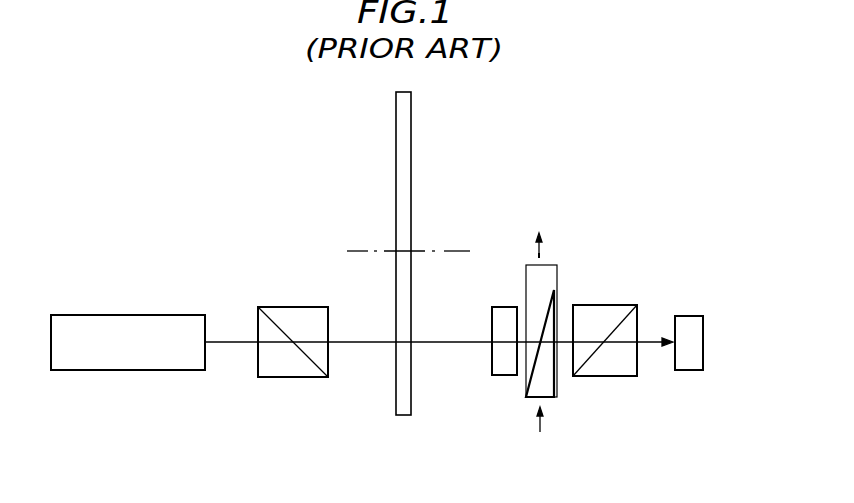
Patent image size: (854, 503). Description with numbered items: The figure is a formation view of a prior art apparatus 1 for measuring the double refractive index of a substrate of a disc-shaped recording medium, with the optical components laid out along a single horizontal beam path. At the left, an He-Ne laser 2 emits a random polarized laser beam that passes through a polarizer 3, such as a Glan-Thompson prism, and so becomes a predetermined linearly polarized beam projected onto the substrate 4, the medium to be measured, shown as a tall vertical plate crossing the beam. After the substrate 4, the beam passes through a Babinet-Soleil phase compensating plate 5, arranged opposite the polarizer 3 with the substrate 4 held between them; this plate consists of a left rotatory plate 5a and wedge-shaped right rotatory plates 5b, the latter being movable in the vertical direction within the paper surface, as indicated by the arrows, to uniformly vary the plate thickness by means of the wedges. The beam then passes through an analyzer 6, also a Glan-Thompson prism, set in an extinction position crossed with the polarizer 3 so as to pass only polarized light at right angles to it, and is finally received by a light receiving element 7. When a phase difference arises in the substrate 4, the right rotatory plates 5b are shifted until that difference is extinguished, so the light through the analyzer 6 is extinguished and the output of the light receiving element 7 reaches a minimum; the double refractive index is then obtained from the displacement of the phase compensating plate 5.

The apparatus 1 is at (268, 202).
The He-Ne laser 2 is at (134, 315).
The polarizer 3 is at (274, 307).
The substrate 4 is at (411, 170).
The phase compensating plate 5 is at (592, 367).
The left rotatory plate 5a is at (496, 375).
The right rotatory plates 5b is at (552, 322).
The analyzer 6 is at (590, 305).
The light receiving element 7 is at (683, 316).